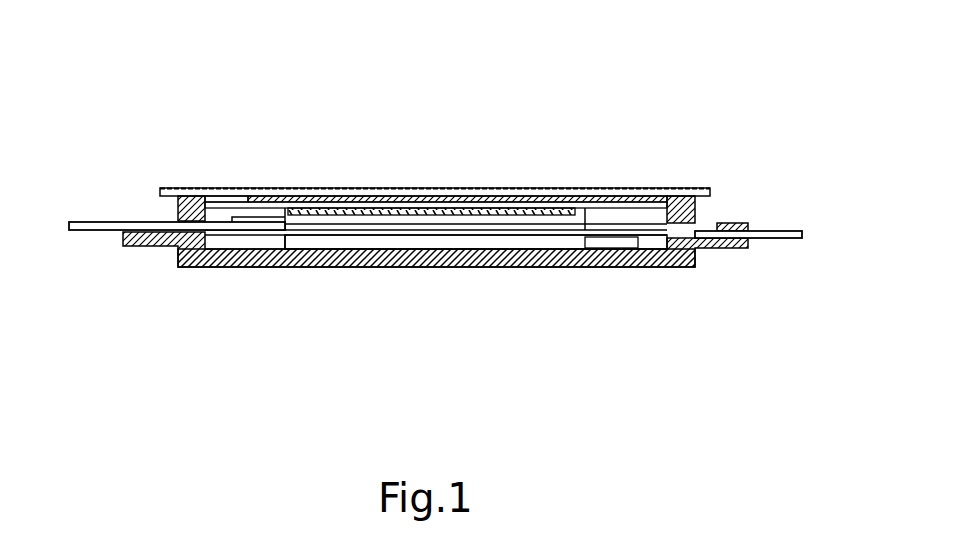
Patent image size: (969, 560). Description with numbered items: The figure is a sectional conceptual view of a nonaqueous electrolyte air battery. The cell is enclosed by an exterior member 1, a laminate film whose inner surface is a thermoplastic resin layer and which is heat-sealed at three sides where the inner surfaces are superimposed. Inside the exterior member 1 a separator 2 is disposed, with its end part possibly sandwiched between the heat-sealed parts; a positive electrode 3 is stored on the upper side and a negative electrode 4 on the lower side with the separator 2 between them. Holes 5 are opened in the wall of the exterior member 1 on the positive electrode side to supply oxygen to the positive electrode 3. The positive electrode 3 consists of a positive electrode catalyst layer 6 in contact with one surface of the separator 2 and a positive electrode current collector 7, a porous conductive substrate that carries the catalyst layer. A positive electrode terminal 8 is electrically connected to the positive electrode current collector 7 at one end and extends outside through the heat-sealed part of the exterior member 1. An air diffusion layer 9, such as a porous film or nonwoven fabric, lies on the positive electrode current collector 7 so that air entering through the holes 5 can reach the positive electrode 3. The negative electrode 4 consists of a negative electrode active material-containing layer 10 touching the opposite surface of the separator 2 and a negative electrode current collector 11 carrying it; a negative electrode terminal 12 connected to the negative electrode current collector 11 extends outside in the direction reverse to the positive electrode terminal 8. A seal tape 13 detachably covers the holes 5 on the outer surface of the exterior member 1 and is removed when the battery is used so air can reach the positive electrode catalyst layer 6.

The exterior member 1 is at (172, 191).
The separator 2 is at (538, 232).
The positive electrode 3 is at (283, 223).
The negative electrode 4 is at (282, 245).
The holes 5 is at (552, 197).
The positive electrode catalyst layer 6 is at (410, 208).
The positive electrode current collector 7 is at (338, 213).
The positive electrode terminal 8 is at (481, 205).
The air diffusion layer 9 is at (102, 233).
The negative electrode active material-containing layer 10 is at (442, 242).
The negative electrode current collector 11 is at (341, 258).
The negative electrode terminal 12 is at (783, 242).
The seal tape 13 is at (618, 188).